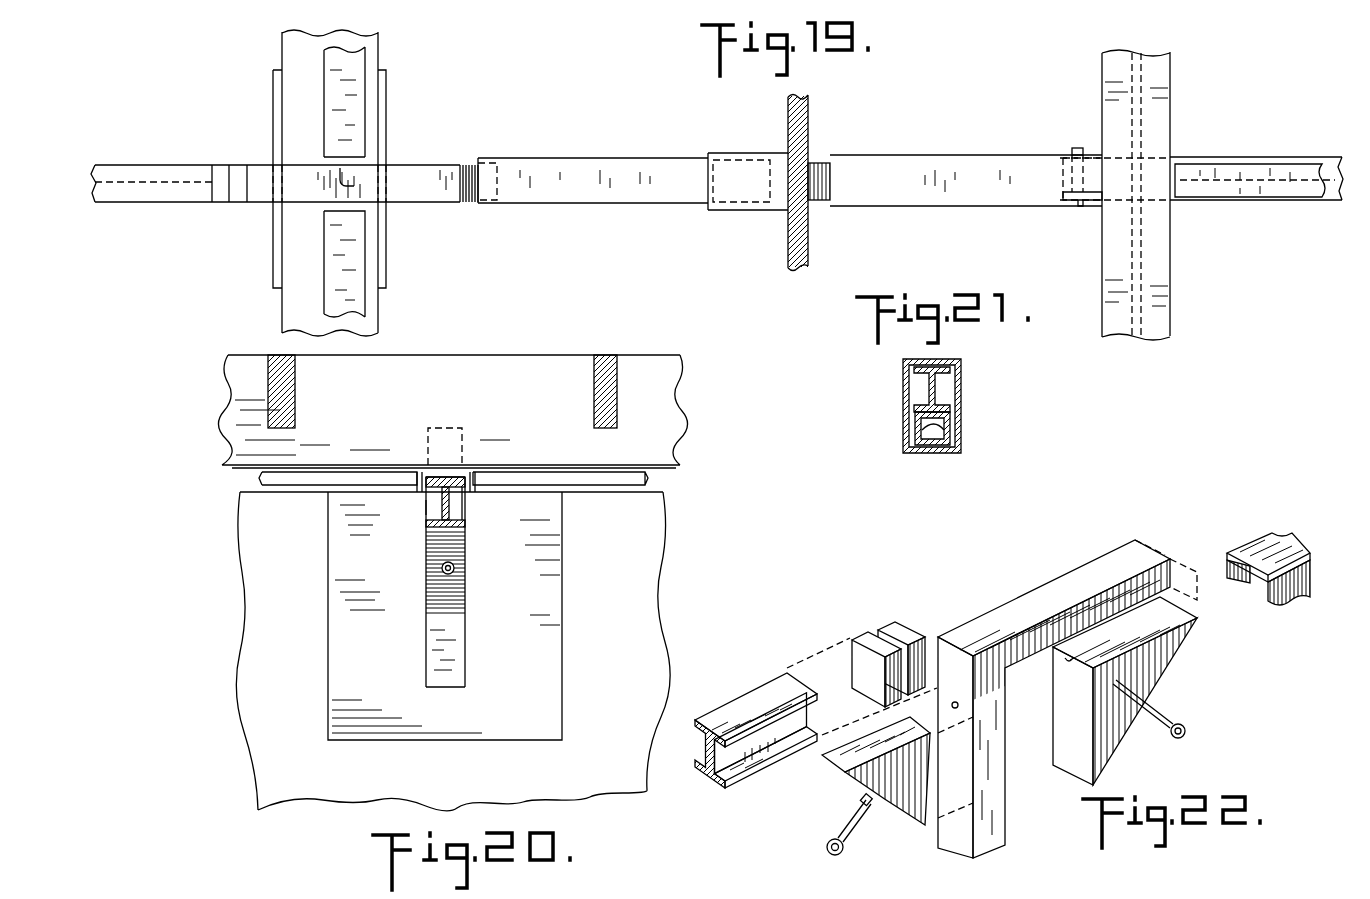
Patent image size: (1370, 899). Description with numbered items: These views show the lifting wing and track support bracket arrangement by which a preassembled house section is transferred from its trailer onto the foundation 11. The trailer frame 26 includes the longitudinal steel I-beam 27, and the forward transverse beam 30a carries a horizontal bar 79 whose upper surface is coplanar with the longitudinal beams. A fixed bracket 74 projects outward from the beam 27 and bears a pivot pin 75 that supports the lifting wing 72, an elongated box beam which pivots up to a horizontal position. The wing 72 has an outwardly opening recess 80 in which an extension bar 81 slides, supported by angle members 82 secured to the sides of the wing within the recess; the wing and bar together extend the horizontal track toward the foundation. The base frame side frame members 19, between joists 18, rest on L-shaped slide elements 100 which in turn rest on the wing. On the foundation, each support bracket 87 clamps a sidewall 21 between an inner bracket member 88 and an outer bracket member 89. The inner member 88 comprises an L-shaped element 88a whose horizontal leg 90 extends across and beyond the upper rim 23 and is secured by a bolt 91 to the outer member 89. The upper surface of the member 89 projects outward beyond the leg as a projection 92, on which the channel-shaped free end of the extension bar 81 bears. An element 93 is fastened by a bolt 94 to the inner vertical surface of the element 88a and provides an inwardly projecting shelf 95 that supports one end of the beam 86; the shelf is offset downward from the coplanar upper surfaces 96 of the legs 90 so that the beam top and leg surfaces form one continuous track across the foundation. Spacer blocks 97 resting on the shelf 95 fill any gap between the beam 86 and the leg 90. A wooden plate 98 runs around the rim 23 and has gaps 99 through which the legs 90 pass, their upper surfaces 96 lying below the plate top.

In FIG. 19, the foundation 11 is at (378, 303).
In FIG. 20, the foundation 11 is at (244, 567).
In FIG. 20, the joists 18 is at (290, 384).
In FIG. 19, the side frame members 19 is at (788, 114).
In FIG. 20, the side frame members 19 is at (462, 394).
In FIG. 19, the sidewalls 21 is at (287, 306).
In FIG. 20, the sidewalls 21 is at (255, 649).
In FIG. 20, the upper rims 23 is at (580, 478).
In FIG. 19, the trailer frame 26 is at (1186, 150).
In FIG. 19, the longitudinal beam 27 is at (1110, 270).
In FIG. 19, the forward transverse beam 30a is at (1246, 206).
In FIG. 19, the lifting wing 72 is at (933, 206).
In FIG. 21, the lifting wing 72 is at (940, 454).
In FIG. 19, the bracket 74 is at (1090, 208).
In FIG. 19, the pivot pin 75 is at (1080, 148).
In FIG. 19, the horizontal bar 79 is at (1288, 167).
In FIG. 19, the recess 80 is at (738, 198).
In FIG. 21, the recess 80 is at (915, 388).
In FIG. 19, the extension bar 81 is at (570, 170).
In FIG. 21, the extension bar 81 is at (935, 385).
In FIG. 22, the extension bar 81 is at (1258, 546).
In FIG. 21, the angle members 82 is at (918, 428).
In FIG. 19, the beam 86 is at (128, 199).
In FIG. 20, the beam 86 is at (445, 505).
In FIG. 22, the beam 86 is at (752, 700).
In FIG. 19, the support bracket 87 is at (262, 205).
In FIG. 20, the support bracket 87 is at (468, 590).
In FIG. 22, the support bracket 87 is at (1097, 690).
In FIG. 22, the inner bracket member 88 is at (930, 829).
In FIG. 20, the L-shaped element 88a is at (448, 653).
In FIG. 22, the L-shaped element 88a is at (990, 806).
In FIG. 22, the outer bracket member 89 is at (1160, 663).
In FIG. 19, the horizontal leg 90 is at (445, 204).
In FIG. 22, the horizontal leg 90 is at (1024, 658).
In FIG. 22, the bolt 91 is at (1162, 710).
In FIG. 19, the projection 92 is at (500, 184).
In FIG. 22, the projection 92 is at (1194, 595).
In FIG. 20, the element 93 is at (457, 546).
In FIG. 22, the element 93 is at (868, 775).
In FIG. 20, the bolt 94 is at (454, 568).
In FIG. 22, the bolt 94 is at (858, 823).
In FIG. 20, the shelf 95 is at (461, 524).
In FIG. 22, the shelf 95 is at (845, 758).
In FIG. 22, the upper surfaces 96 is at (1115, 565).
In FIG. 19, the spacer blocks 97 is at (238, 163).
In FIG. 22, the spacer blocks 97 is at (862, 638).
In FIG. 19, the wooden plate 98 is at (350, 92).
In FIG. 20, the wooden plate 98 is at (288, 483).
In FIG. 19, the gaps 99 is at (350, 184).
In FIG. 20, the gaps 99 is at (462, 475).
In FIG. 19, the slide elements 100 is at (830, 190).
In FIG. 20, the slide elements 100 is at (430, 471).